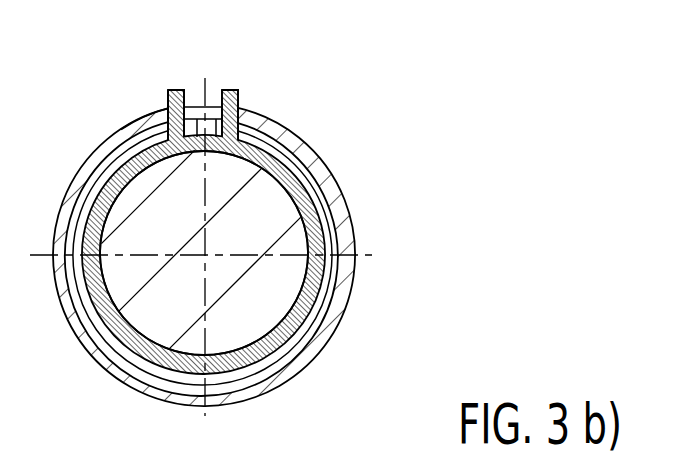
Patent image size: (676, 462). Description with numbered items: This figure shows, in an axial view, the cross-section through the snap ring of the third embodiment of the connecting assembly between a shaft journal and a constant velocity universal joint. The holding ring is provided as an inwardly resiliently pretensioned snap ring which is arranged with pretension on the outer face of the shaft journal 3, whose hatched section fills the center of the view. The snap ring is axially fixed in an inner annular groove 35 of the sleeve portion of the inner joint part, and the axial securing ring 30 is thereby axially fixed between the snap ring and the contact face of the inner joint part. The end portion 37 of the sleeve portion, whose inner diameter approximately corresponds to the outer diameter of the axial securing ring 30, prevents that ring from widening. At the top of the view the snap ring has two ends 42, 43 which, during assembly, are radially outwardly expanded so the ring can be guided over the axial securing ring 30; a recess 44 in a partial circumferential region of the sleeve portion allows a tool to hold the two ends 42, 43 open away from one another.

The shaft journal 3 is at (133, 199).
The axial securing ring 30 is at (214, 107).
The inner annular groove 35 is at (336, 221).
The end portion 37 is at (332, 166).
The end of snap ring 42 is at (233, 90).
The end of snap ring 43 is at (173, 90).
The recess 44 is at (148, 120).